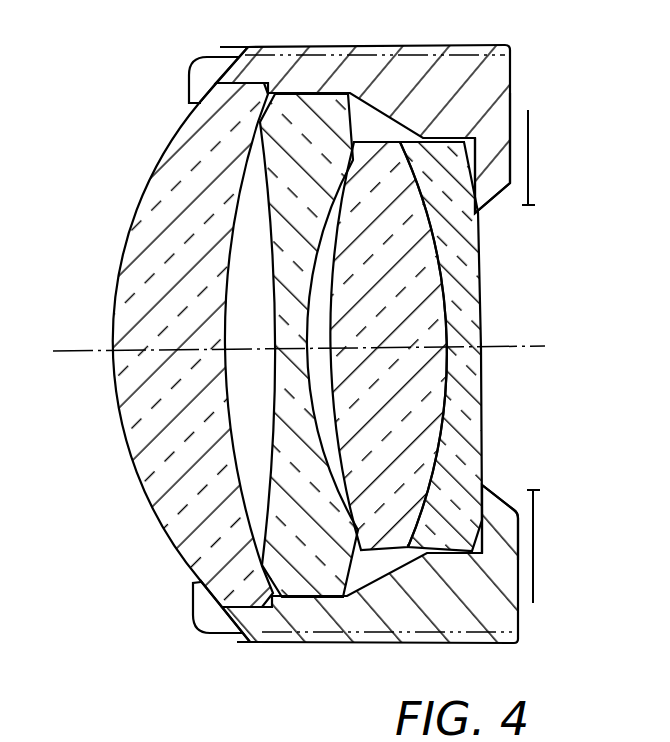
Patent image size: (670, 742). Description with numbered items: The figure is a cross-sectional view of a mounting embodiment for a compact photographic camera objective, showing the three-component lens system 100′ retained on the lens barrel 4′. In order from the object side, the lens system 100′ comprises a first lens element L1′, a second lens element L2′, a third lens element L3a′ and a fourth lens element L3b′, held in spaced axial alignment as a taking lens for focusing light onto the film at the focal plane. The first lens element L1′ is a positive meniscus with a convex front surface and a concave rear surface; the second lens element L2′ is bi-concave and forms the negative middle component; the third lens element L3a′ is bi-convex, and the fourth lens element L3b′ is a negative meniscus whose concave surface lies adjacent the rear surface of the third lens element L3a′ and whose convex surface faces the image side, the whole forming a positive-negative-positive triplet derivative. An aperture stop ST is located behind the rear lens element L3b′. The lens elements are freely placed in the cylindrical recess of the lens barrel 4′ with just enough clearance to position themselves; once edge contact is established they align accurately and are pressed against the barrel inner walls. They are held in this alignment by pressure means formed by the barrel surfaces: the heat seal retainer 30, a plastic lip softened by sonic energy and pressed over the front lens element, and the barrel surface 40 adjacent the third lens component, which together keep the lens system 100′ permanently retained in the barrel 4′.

The lens system 100′ is at (98, 183).
The lens barrel 4′ is at (282, 643).
The heat seal retainer 30 is at (197, 70).
The barrel surface 40 is at (512, 110).
The aperture stop ST is at (530, 173).
The first lens element L1′ is at (143, 484).
The second lens element L2′ is at (277, 503).
The third lens element L3a′ is at (423, 385).
The fourth lens element L3b′ is at (486, 319).